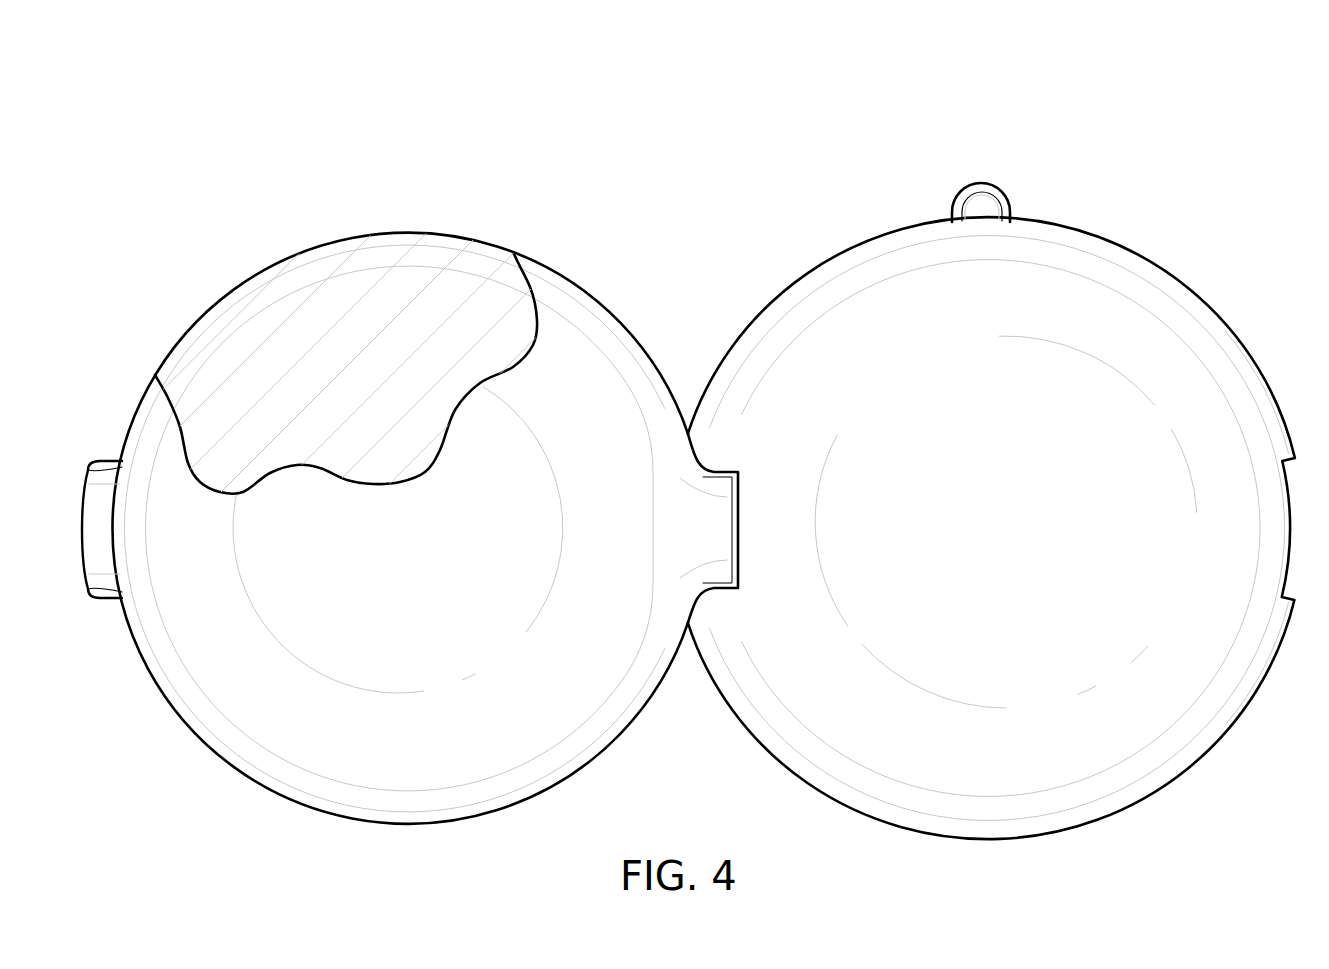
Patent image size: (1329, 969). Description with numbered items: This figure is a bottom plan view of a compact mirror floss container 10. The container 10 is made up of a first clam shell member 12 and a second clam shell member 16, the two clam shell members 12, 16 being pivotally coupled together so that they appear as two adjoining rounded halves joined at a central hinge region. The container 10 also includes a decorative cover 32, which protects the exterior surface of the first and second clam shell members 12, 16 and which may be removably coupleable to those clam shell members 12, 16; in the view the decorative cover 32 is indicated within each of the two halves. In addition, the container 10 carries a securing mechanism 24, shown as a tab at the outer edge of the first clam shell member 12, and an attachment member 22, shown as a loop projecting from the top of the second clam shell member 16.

The compact mirror floss container 10 is at (808, 148).
The first clam shell member 12 is at (327, 302).
The second clam shell member 16 is at (1230, 330).
The attachment member 22 is at (983, 183).
The securing mechanism 24 is at (100, 527).
The decorative cover 32 is at (416, 555).